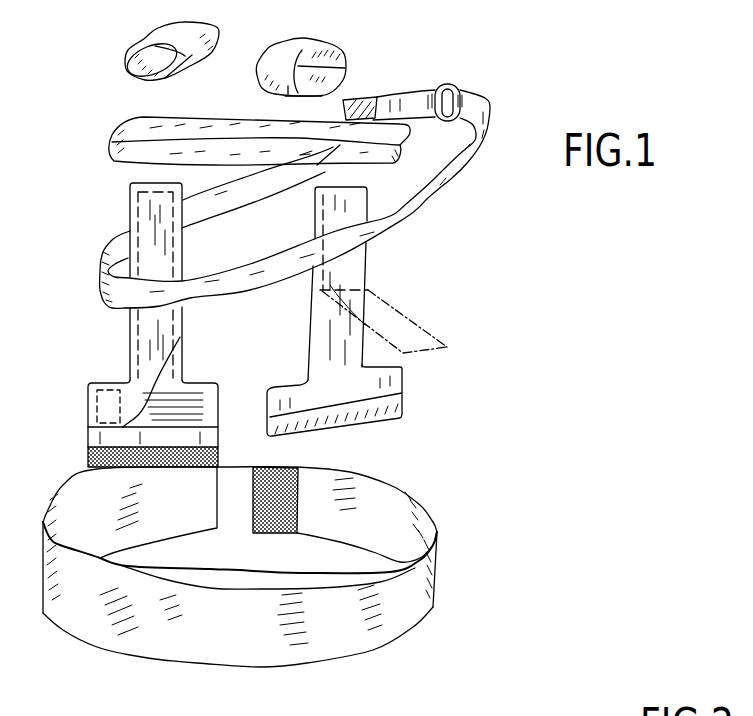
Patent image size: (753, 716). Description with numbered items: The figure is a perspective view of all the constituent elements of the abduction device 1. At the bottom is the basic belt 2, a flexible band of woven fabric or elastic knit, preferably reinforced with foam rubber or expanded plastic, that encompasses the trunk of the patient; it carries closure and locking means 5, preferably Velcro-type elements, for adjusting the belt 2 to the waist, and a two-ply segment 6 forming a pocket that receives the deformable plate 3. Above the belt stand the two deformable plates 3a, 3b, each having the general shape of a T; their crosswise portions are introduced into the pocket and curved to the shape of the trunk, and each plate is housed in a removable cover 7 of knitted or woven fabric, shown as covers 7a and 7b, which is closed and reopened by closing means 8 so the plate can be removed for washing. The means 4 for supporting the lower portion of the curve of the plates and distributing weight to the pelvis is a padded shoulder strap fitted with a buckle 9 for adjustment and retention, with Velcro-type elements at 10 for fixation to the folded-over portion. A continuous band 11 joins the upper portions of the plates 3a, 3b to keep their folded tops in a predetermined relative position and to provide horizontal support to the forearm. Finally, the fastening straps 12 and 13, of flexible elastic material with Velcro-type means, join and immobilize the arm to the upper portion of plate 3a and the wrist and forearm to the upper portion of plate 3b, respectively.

The device 1 is at (497, 305).
The basic belt 2 is at (220, 641).
The deformable plate 3 is at (277, 366).
The deformable plate 3a is at (143, 403).
The deformable plate 3b is at (403, 381).
The means for supporting 4 is at (427, 195).
The closure and locking means 5 is at (277, 481).
The 2-ply segment 6 is at (241, 569).
The removable cover 7 is at (378, 268).
The removable cover 7a is at (130, 318).
The removable cover 7b is at (363, 392).
The closing means 8 is at (87, 455).
The buckle 9 is at (448, 84).
The Velcro-type elements 10 is at (357, 103).
The continuous band 11 is at (107, 152).
The fastening strap 12 is at (163, 32).
The fastening strap 13 is at (290, 50).